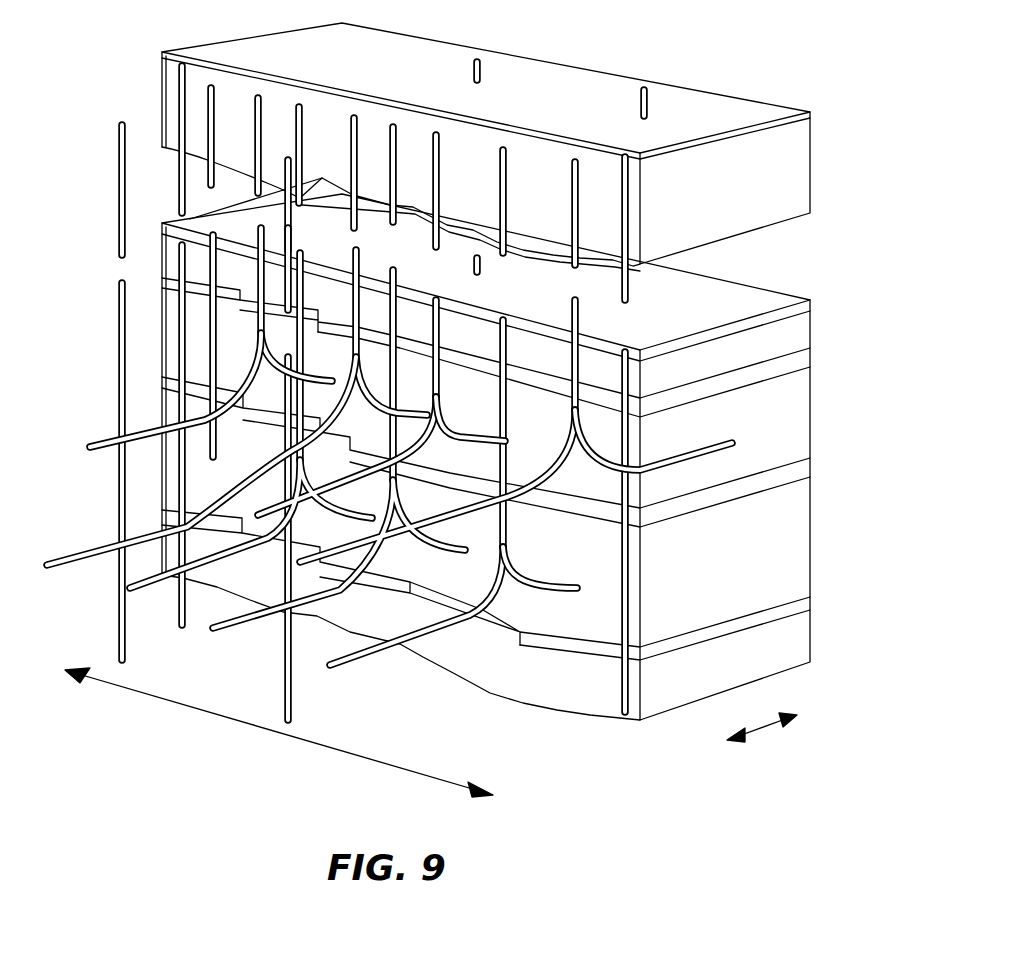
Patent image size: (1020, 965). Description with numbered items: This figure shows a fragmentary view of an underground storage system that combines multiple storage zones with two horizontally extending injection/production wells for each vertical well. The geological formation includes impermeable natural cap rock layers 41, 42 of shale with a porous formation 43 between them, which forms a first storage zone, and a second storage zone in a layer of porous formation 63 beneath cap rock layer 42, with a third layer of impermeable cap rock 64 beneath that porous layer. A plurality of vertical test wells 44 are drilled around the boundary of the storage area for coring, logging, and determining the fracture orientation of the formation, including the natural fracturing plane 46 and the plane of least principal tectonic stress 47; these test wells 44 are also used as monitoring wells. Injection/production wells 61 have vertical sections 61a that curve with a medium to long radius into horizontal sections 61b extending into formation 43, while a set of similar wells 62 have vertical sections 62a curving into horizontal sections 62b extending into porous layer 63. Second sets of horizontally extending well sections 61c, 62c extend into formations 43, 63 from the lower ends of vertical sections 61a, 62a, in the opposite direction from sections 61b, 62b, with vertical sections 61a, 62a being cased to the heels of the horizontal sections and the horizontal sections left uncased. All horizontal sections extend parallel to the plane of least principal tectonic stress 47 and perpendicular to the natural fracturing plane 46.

The cap rock layer 41 is at (800, 362).
The cap rock layer 42 is at (800, 470).
The porous formation 43 is at (800, 433).
The vertical test wells 44 is at (118, 168).
The natural fracturing plane 46 is at (410, 775).
The plane of least principal tectonic stress 47 is at (757, 738).
The injection/production wells 61 is at (257, 106).
The vertical sections 61a is at (361, 128).
The horizontal sections 61b is at (313, 373).
The horizontally extending well sections 61c is at (108, 433).
The wells 62 is at (417, 393).
The vertical section 62a is at (510, 155).
The horizontal section 62b is at (565, 590).
The horizontally extending well sections 62c is at (108, 537).
The porous formation 63 is at (800, 551).
The cap rock 64 is at (800, 600).